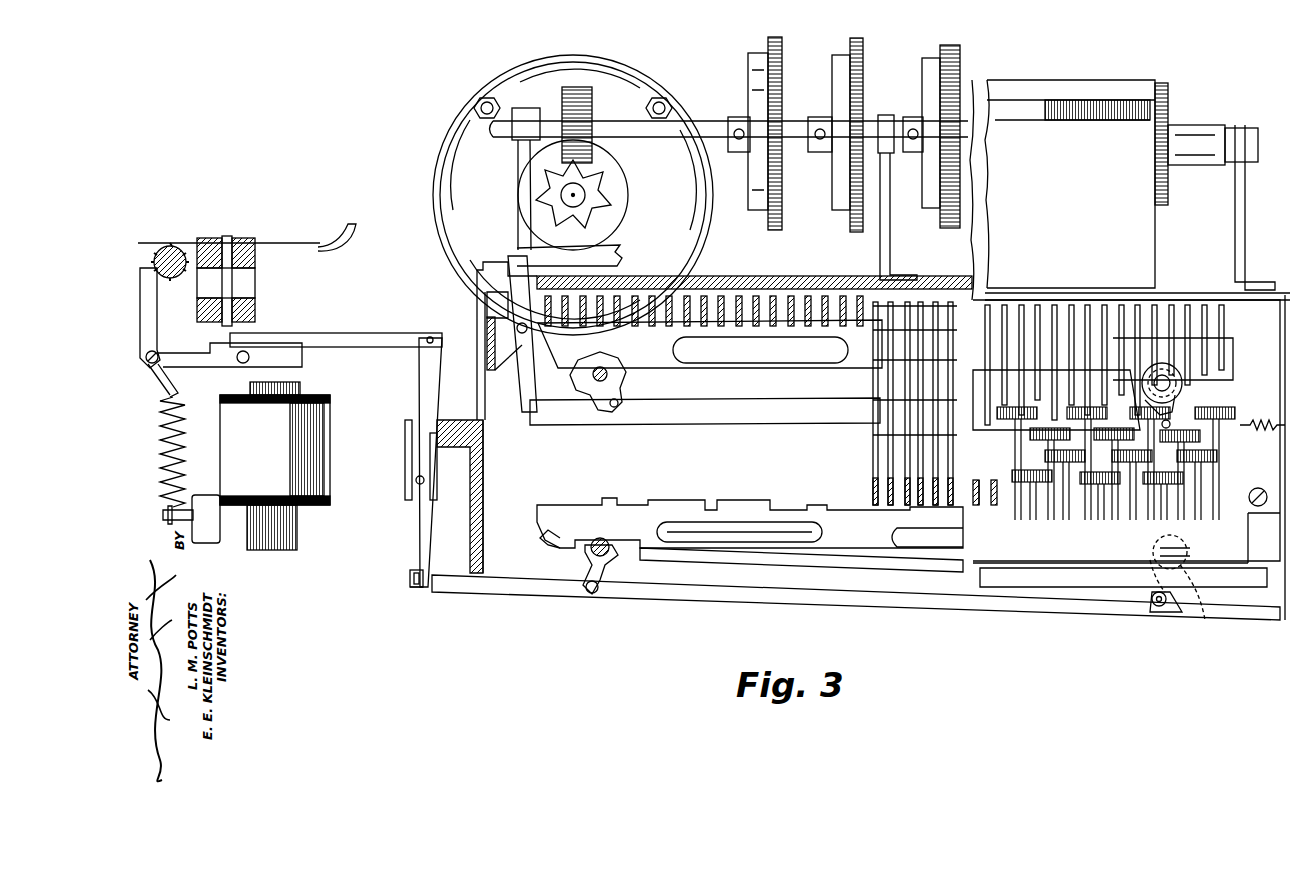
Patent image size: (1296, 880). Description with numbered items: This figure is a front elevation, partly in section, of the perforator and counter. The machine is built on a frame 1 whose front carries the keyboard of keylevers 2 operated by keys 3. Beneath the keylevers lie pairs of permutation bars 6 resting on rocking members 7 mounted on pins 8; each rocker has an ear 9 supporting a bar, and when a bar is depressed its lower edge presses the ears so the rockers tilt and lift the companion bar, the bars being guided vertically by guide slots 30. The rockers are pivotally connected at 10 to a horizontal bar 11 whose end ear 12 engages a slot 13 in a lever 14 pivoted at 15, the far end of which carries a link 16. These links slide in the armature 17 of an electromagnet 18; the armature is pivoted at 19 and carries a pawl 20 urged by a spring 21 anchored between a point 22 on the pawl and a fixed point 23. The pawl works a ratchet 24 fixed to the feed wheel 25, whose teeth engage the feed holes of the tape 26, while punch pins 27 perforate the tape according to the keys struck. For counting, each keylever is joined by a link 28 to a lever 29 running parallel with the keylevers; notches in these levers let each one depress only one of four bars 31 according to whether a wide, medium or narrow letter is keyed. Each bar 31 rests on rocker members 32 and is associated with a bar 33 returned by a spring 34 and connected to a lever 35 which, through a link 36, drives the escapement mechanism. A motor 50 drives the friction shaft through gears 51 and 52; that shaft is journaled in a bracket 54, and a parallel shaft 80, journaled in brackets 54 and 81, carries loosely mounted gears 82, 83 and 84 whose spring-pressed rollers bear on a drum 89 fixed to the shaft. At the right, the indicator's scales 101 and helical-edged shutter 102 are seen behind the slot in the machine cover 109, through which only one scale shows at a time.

The frame 1 is at (482, 490).
The keylevers 2 is at (880, 492).
The keys 3 is at (1052, 500).
The permutation bar 6 is at (833, 545).
The rocking member 7 is at (590, 572).
The pin 8 is at (608, 540).
The ear 9 is at (558, 550).
The pivotal connection 10 is at (595, 592).
The horizontal bar 11 is at (713, 592).
The ear 12 is at (416, 590).
The slot 13 is at (410, 574).
The lever 14 is at (422, 520).
The pivot 15 is at (416, 480).
The link 16 is at (350, 347).
The armature 17 is at (192, 357).
The electromagnet 18 is at (312, 458).
The pivot 19 is at (238, 362).
The pawl 20 is at (160, 378).
The spring 21 is at (162, 440).
The spring connection 22 is at (176, 392).
The fixed point 23 is at (163, 514).
The ratchet 24 is at (168, 246).
The feed wheel 25 is at (182, 246).
The tape 26 is at (308, 244).
The punch pins 27 is at (256, 266).
The link 28 is at (872, 438).
The lever 29 is at (750, 272).
The guide slots 30 is at (1225, 360).
The bars 31 is at (848, 366).
The rocker member 32 is at (618, 388).
The bar 33 is at (630, 420).
The spring 34 is at (1275, 425).
The lever 35 is at (522, 380).
The link 36 is at (615, 250).
The motor 50 is at (468, 146).
The gear 51 is at (588, 200).
The gear 52 is at (585, 90).
The bracket 54 is at (517, 178).
The shaft 80 is at (792, 126).
The bracket 81 is at (1234, 183).
The gear 82 is at (780, 55).
The gear 83 is at (862, 56).
The gear 84 is at (958, 54).
The drum 89 is at (750, 68).
The scales 101 is at (1108, 100).
The helical-edged shutter 102 is at (1038, 100).
The cover 109 is at (1140, 252).